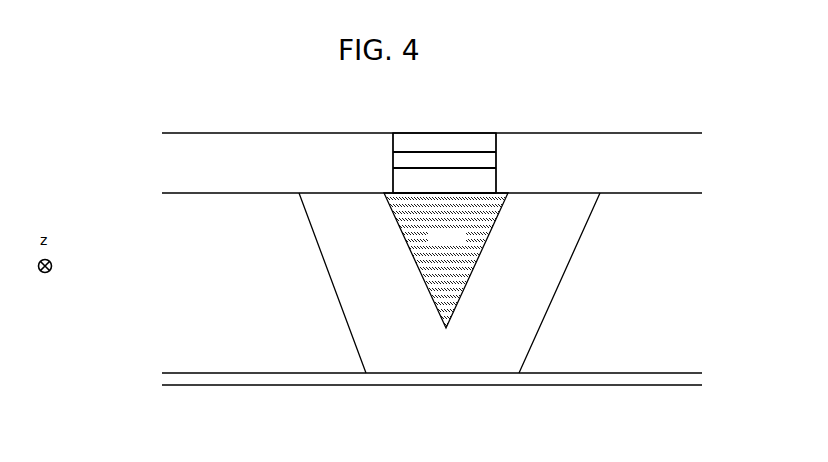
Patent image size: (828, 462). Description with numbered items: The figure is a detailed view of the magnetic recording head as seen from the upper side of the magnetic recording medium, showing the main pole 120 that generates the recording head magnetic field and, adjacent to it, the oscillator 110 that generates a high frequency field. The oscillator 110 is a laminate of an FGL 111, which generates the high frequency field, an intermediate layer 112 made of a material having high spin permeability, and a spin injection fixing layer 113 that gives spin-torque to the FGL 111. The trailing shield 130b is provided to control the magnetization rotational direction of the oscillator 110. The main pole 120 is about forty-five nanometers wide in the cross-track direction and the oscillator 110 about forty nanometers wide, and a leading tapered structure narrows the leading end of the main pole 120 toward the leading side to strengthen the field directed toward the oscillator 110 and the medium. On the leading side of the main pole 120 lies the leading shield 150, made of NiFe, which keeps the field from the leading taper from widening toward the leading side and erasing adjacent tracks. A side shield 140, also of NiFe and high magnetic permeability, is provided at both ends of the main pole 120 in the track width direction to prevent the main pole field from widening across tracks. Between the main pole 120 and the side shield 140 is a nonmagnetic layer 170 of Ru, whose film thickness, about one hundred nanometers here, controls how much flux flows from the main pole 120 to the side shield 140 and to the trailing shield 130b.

The oscillator 110 is at (312, 140).
The FGL 111 is at (392, 180).
The intermediate layer 112 is at (392, 160).
The spin injection fixing layer 113 is at (392, 142).
The main pole 120 is at (446, 260).
The trailing shield 130b is at (444, 136).
The side shield 140 is at (432, 194).
The leading shield 150 is at (432, 401).
The nonmagnetic layer 170 is at (449, 283).